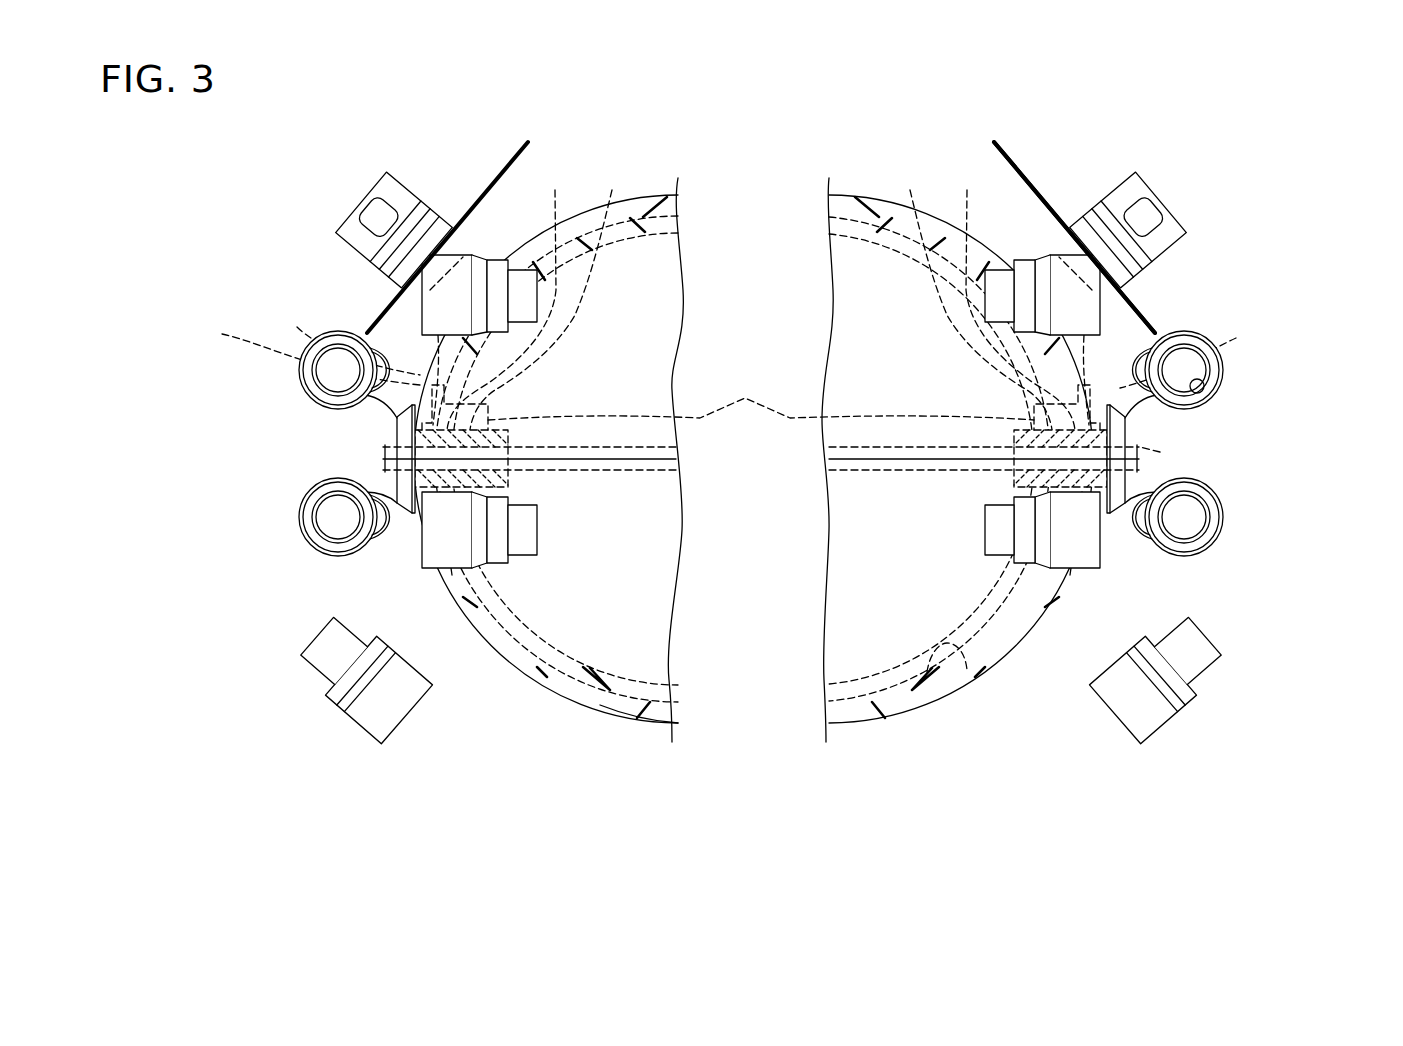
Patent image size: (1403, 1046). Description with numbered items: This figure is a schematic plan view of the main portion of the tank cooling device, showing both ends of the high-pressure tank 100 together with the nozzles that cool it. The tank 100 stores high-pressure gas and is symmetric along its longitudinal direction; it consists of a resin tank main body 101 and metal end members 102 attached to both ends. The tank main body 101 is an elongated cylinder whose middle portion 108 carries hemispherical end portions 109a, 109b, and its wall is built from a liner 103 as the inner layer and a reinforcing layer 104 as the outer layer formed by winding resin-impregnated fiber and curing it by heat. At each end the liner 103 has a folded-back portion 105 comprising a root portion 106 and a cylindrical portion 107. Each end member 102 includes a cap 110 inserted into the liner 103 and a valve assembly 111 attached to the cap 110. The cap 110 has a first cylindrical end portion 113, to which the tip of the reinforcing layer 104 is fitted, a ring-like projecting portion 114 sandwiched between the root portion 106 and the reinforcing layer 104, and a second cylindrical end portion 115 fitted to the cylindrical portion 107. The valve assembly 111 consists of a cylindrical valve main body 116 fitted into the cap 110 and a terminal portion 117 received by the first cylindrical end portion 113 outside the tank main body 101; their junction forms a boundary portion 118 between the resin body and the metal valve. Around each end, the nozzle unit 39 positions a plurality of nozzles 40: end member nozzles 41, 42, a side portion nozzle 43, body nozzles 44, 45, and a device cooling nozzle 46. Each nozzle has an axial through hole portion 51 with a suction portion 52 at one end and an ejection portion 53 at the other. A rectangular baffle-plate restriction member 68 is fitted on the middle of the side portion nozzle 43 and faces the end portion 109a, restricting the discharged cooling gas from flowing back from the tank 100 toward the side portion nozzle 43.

The nozzle unit 39 is at (783, 171).
The nozzles 40 is at (765, 402).
The end member nozzle 41 is at (308, 540).
The end member nozzle 42 is at (300, 383).
The side portion nozzle 43 is at (345, 190).
The body nozzle 44 is at (470, 255).
The body nozzle 45 is at (497, 572).
The device cooling nozzle 46 is at (400, 738).
The through hole portion 51 is at (1210, 390).
The suction portion 52 is at (1170, 192).
The ejection portion 53 is at (1100, 215).
The restriction member 68 is at (528, 145).
The high-pressure tank 100 is at (753, 530).
The tank main body 101 is at (886, 725).
The end member 102 is at (400, 432).
The liner 103 is at (962, 675).
The reinforcing layer 104 is at (930, 725).
The folded-back portion 105 is at (761, 279).
The root portion 106 is at (761, 297).
The cylindrical portion 107 is at (1005, 170).
The middle portion 108 is at (648, 725).
The end portion 109a is at (1100, 416).
The end portion 109b is at (422, 416).
The cap 110 is at (398, 447).
The valve assembly 111 is at (760, 491).
The first cylindrical end portion 113 is at (693, 386).
The projecting portion 114 is at (769, 344).
The second cylindrical end portion 115 is at (761, 415).
The valve main body 116 is at (392, 462).
The terminal portion 117 is at (392, 478).
The boundary portion 118 is at (407, 512).